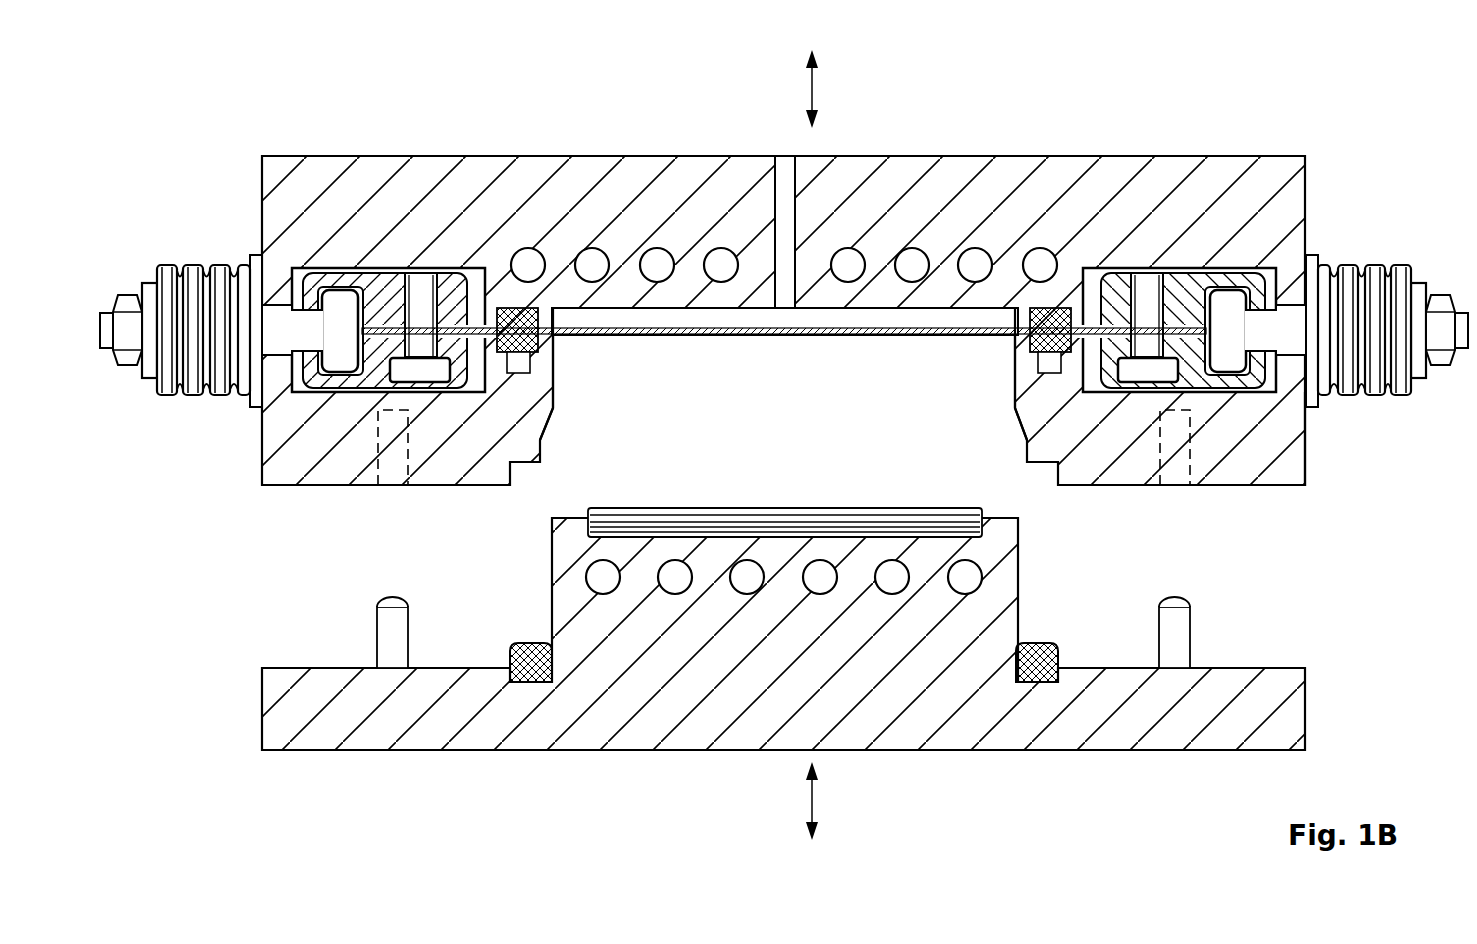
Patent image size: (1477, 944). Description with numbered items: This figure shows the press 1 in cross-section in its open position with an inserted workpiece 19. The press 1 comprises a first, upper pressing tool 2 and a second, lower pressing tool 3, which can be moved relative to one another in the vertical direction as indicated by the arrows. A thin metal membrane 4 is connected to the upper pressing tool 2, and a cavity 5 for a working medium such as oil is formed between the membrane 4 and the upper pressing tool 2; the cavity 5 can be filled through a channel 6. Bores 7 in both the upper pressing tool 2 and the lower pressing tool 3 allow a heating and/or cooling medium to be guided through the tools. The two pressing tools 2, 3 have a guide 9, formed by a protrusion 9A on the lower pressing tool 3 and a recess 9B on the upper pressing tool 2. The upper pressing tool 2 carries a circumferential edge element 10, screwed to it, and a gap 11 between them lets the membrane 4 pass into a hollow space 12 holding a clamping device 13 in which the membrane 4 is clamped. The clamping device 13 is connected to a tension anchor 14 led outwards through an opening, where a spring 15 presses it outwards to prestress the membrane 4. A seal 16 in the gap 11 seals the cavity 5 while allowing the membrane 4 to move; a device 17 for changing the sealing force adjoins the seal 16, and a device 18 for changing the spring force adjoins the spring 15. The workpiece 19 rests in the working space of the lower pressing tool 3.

The press 1 is at (238, 114).
The upper pressing tool 2 is at (1258, 168).
The lower pressing tool 3 is at (1285, 718).
The membrane 4 is at (680, 335).
The cavity 5 is at (780, 317).
The channel 6 is at (783, 170).
The bores 7 is at (975, 262).
The guide 9 is at (870, 539).
The protrusion 9A is at (1180, 627).
The recess 9B is at (1178, 457).
The edge element 10 is at (1287, 440).
The gap 11 is at (1050, 365).
The hollow space 12 is at (1092, 280).
The clamping device 13 is at (1183, 283).
The tension anchor 14 is at (1233, 302).
The spring 15 is at (1368, 273).
The seal 16 is at (555, 308).
The device for changing the sealing force 17 is at (550, 395).
The device for changing the spring force 18 is at (1440, 303).
The workpiece 19 is at (925, 528).